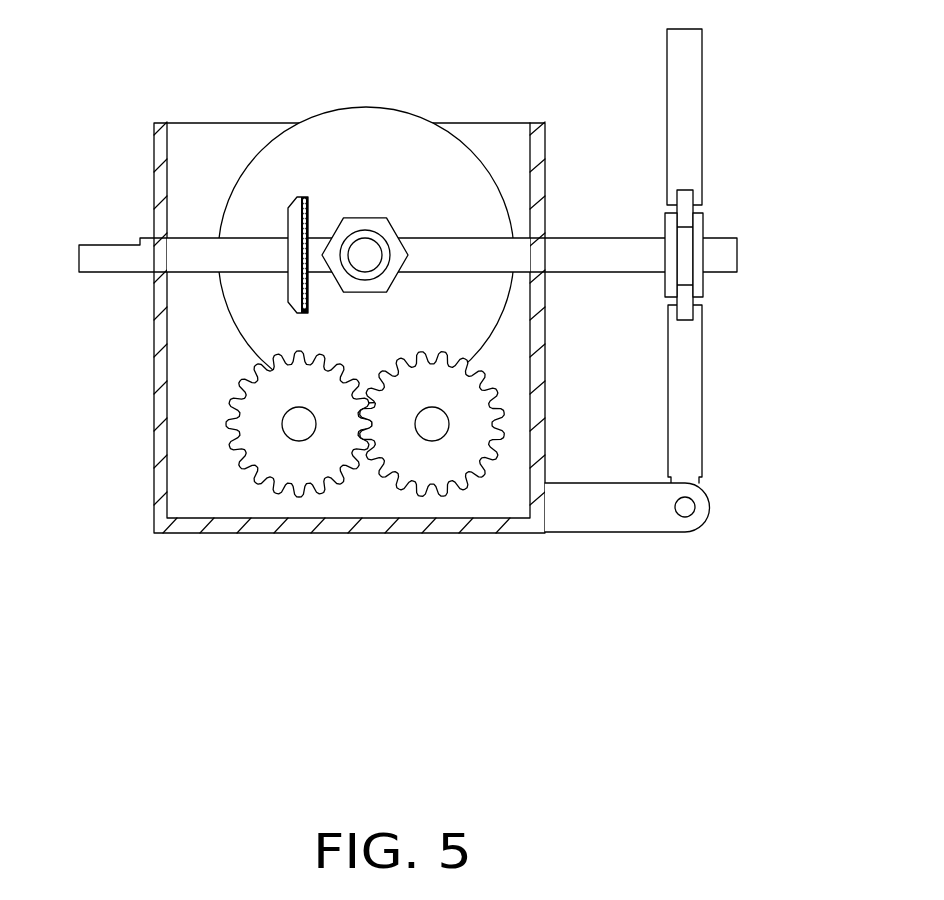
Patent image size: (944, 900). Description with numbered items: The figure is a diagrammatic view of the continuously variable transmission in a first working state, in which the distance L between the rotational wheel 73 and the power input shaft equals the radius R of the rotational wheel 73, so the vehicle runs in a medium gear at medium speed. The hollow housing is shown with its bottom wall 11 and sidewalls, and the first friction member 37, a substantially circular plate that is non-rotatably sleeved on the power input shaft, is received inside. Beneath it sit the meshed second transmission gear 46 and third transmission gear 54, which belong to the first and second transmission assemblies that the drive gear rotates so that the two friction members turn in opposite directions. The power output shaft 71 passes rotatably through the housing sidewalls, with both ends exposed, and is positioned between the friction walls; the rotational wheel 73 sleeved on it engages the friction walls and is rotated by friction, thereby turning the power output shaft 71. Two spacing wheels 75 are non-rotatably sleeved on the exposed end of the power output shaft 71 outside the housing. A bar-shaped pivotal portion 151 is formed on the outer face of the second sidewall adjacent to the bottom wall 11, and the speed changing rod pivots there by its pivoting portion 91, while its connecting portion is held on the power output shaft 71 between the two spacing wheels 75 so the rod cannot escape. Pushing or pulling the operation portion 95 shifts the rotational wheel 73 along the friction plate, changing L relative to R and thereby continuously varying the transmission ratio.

The bottom wall 11 is at (225, 527).
The first friction member 37 is at (347, 140).
The power output shaft 71 is at (106, 257).
The rotational wheel 73 is at (290, 208).
The spacing wheels 75 is at (697, 227).
The operation portion 95 is at (690, 117).
The pivoting portion 91 is at (683, 397).
The pivotal portion 151 is at (617, 515).
The third transmission gear 54 is at (322, 462).
The second transmission gear 46 is at (425, 462).